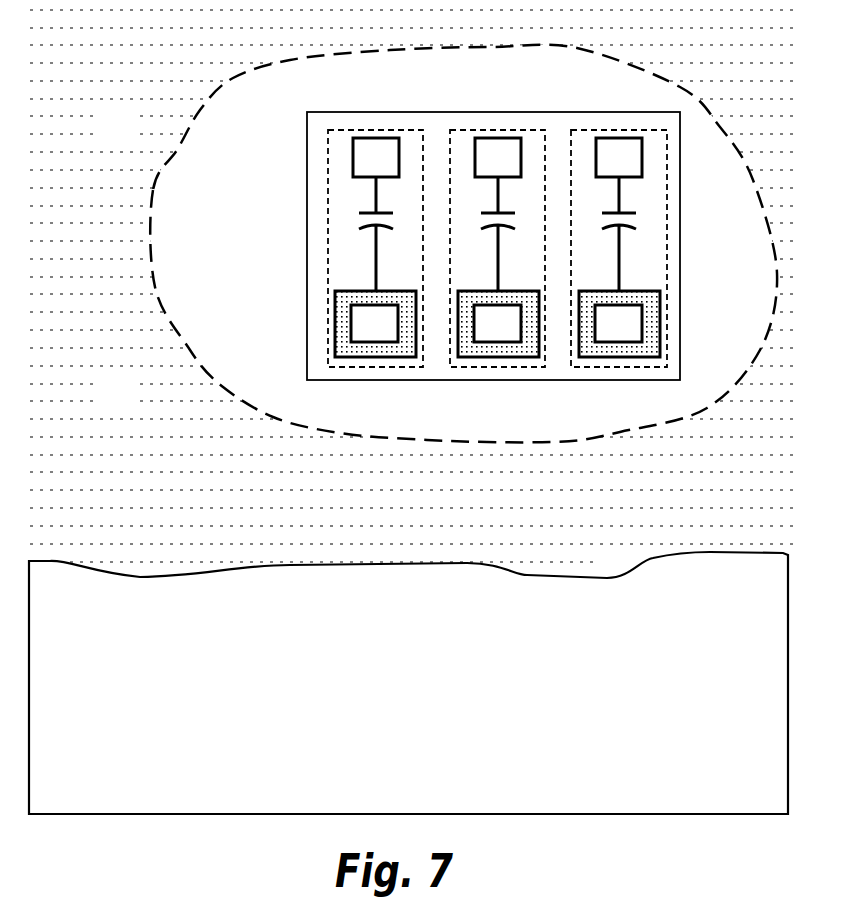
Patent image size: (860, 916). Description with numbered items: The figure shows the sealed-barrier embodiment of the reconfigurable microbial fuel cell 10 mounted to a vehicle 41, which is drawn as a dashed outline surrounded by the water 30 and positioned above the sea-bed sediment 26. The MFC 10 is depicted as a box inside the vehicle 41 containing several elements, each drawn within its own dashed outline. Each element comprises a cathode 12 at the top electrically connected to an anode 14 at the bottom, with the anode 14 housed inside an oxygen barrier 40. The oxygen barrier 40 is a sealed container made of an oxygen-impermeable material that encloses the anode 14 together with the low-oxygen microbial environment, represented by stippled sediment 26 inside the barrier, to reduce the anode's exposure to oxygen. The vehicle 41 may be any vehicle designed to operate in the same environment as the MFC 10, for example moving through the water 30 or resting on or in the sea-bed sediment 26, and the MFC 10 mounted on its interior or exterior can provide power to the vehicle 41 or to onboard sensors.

The reconfigurable microbial fuel cell 10 is at (307, 254).
The cathode 12 is at (497, 157).
The anode 14 is at (496, 323).
The sea-bed sediment 26 is at (347, 317).
The water 30 is at (134, 408).
The oxygen barrier 40 is at (353, 358).
The vehicle 41 is at (170, 168).